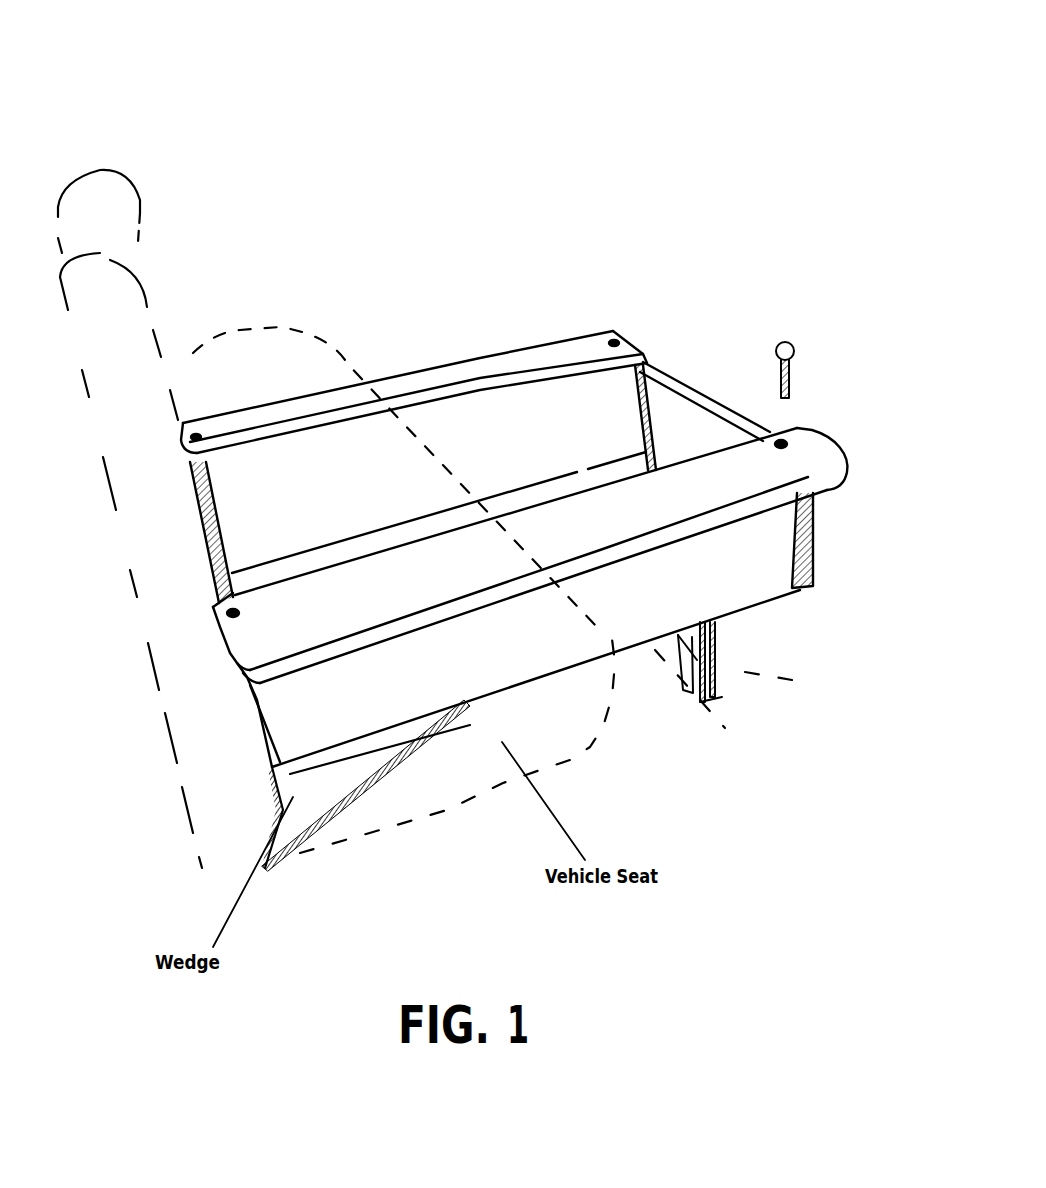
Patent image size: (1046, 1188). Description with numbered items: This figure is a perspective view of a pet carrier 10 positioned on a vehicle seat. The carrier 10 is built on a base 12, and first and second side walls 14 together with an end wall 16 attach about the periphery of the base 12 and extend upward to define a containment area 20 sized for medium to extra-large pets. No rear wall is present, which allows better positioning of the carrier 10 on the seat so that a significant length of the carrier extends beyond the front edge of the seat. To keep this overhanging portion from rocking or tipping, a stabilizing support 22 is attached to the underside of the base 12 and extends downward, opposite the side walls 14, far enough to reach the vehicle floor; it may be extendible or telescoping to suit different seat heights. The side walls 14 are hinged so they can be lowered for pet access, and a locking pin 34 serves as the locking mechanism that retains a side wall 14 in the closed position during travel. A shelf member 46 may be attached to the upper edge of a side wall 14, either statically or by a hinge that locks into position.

The carrier 10 is at (409, 148).
The base 12 is at (300, 570).
The first and second side walls 14 is at (442, 410).
The end wall 16 is at (708, 418).
The containment area 20 is at (569, 463).
The stabilizing support 22 is at (710, 650).
The locking pin 34 is at (790, 368).
The shelf member 46 is at (660, 492).